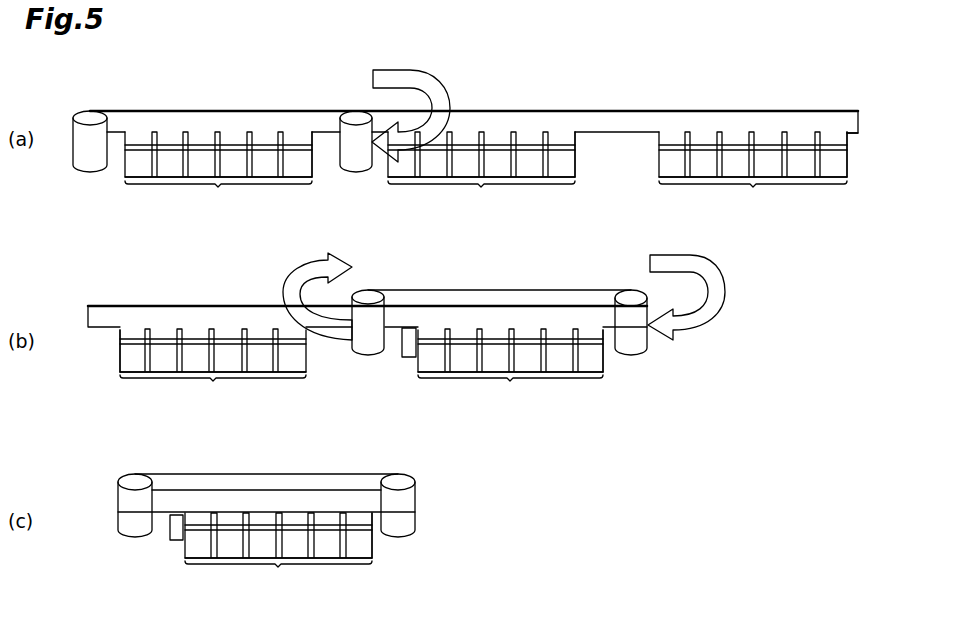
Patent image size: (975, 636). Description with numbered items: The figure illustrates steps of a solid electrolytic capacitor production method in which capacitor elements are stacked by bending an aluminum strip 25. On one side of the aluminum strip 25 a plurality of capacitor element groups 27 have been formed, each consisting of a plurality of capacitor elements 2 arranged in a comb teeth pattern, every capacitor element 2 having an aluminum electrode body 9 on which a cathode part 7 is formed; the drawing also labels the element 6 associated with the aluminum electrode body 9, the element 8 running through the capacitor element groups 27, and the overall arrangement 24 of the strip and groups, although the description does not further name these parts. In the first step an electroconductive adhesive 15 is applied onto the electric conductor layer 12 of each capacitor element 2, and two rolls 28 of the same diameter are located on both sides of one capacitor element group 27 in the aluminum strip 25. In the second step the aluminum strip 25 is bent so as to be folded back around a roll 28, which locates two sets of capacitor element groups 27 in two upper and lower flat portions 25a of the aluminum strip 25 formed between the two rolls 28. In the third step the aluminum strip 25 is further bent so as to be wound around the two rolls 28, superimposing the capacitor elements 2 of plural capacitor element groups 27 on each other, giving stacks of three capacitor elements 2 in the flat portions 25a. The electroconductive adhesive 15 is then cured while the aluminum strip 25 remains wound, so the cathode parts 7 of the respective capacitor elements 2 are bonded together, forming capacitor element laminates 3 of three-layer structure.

The capacitor element 2 is at (388, 389).
The capacitor element laminate 3 is at (316, 162).
The side wall 6 is at (312, 140).
The cathode part 7 is at (123, 162).
The sheet element 8 is at (203, 147).
The aluminum electrode body 9 is at (483, 355).
The electric conductor layer 12 is at (498, 387).
The electroconductive adhesive 15 is at (168, 157).
The carrier assembly 24 is at (583, 93).
The aluminum strip 25 is at (639, 118).
The flat portion 25a is at (427, 303).
The capacitor element group 27 is at (483, 386).
The roll 28 is at (86, 112).